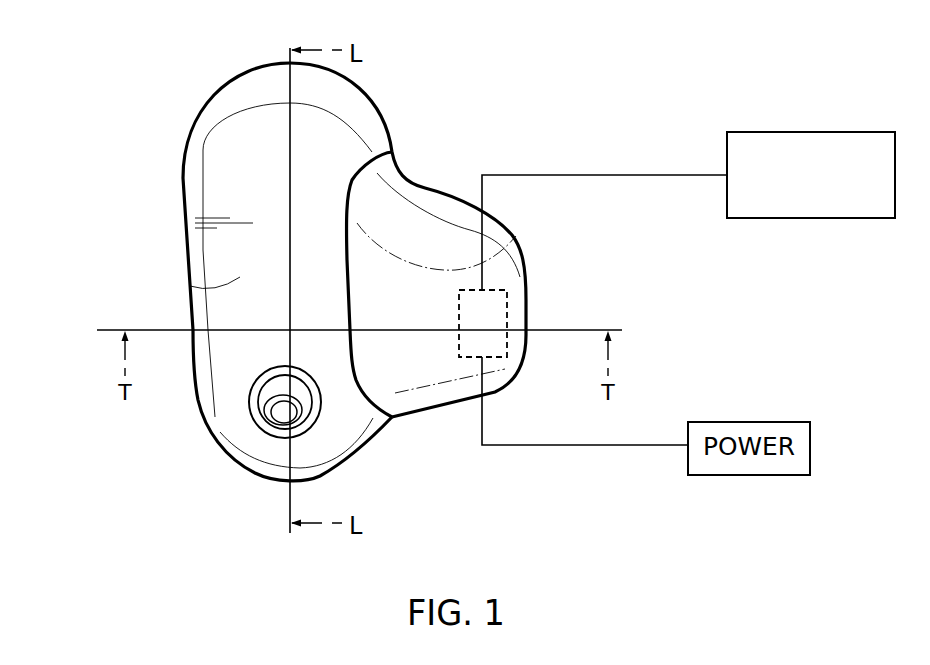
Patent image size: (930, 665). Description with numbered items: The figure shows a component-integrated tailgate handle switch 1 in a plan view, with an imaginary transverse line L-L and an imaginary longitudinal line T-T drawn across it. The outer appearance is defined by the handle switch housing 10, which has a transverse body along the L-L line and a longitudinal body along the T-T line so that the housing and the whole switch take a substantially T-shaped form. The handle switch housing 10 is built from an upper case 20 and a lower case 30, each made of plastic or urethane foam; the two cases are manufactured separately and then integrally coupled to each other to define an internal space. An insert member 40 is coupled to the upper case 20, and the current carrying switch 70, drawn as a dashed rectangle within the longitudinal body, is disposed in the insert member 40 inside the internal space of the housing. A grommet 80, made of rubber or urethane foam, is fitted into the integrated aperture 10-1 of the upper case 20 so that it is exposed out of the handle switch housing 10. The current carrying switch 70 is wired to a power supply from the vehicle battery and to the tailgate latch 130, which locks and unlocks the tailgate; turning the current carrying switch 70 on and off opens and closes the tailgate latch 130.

The tailgate handle switch 1 is at (456, 78).
The handle switch housing 10 is at (108, 75).
The lower case 30 is at (229, 83).
The upper case 20 is at (197, 148).
The insert member 40 is at (190, 286).
The integrated aperture 10-1 is at (365, 428).
The grommet 80 is at (272, 432).
The current carrying switch 70 is at (506, 310).
The tailgate latch 130 is at (789, 131).